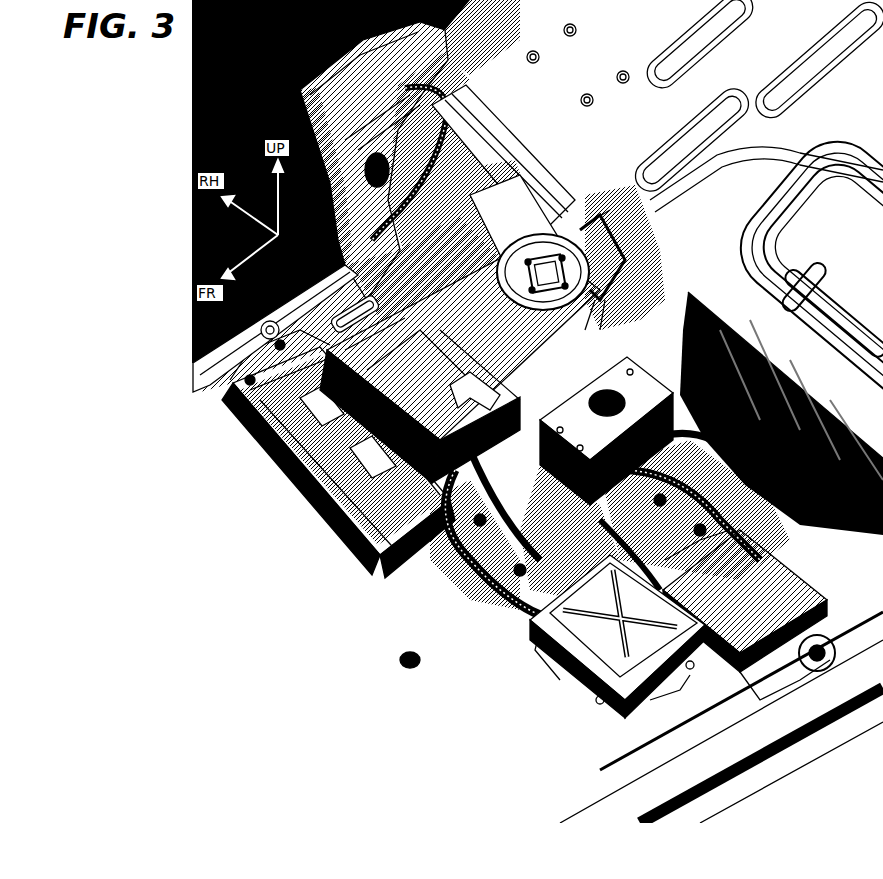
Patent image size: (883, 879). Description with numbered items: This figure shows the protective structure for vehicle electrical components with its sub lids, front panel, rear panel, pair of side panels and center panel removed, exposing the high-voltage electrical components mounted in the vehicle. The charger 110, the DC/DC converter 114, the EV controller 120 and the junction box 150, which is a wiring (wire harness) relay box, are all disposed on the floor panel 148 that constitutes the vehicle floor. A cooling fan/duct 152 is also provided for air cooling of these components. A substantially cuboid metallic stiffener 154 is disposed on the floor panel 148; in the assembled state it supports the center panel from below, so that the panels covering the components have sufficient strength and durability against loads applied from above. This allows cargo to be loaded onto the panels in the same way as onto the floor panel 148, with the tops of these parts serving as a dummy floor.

The charger 110 is at (390, 323).
The DC/DC converter 114 is at (311, 462).
The EV controller 120 is at (740, 622).
The floor panel 148 is at (265, 787).
The junction box 150 is at (613, 648).
The cooling fan/duct 152 is at (565, 235).
The stiffener 154 is at (640, 372).